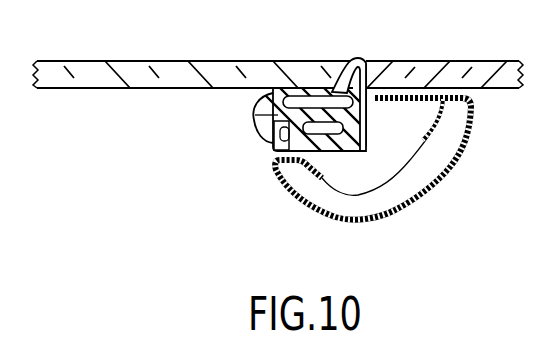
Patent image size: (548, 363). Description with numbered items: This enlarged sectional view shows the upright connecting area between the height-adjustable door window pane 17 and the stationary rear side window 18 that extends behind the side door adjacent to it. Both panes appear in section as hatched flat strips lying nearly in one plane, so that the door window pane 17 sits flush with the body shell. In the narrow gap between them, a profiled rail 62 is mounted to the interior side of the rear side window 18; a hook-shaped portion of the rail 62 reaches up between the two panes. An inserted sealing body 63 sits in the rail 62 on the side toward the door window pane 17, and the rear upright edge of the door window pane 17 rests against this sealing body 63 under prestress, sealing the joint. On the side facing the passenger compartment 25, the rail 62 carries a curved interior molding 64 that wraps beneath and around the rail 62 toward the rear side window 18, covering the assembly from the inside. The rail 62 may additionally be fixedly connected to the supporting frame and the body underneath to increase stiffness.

The door window pane 17 is at (83, 65).
The rear side window 18 is at (460, 62).
The passenger compartment 25 is at (340, 161).
The profiled rail 62 is at (374, 123).
The sealing body 63 is at (256, 104).
The interior molding 64 is at (396, 205).